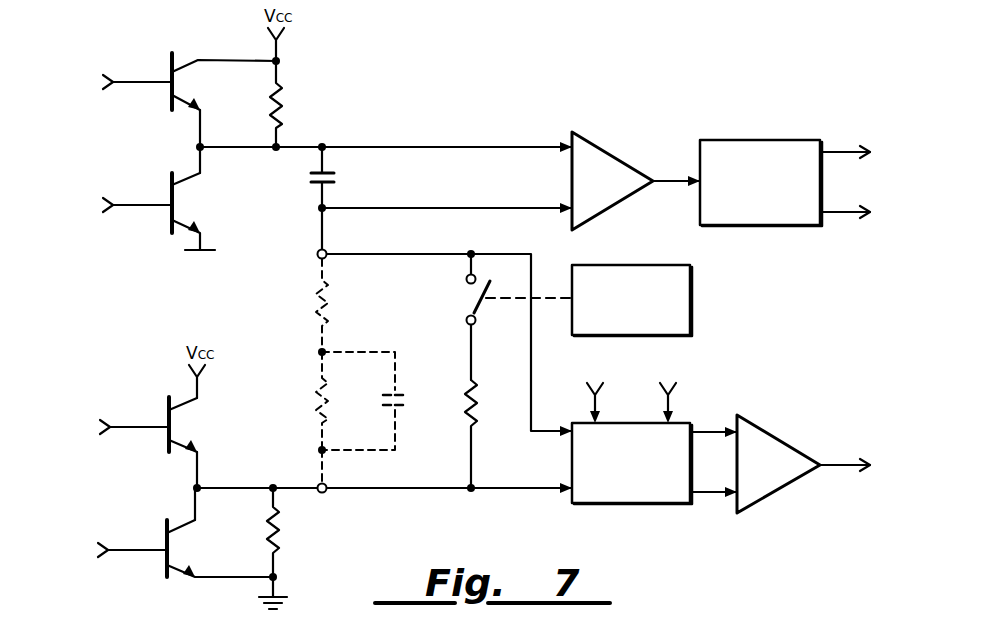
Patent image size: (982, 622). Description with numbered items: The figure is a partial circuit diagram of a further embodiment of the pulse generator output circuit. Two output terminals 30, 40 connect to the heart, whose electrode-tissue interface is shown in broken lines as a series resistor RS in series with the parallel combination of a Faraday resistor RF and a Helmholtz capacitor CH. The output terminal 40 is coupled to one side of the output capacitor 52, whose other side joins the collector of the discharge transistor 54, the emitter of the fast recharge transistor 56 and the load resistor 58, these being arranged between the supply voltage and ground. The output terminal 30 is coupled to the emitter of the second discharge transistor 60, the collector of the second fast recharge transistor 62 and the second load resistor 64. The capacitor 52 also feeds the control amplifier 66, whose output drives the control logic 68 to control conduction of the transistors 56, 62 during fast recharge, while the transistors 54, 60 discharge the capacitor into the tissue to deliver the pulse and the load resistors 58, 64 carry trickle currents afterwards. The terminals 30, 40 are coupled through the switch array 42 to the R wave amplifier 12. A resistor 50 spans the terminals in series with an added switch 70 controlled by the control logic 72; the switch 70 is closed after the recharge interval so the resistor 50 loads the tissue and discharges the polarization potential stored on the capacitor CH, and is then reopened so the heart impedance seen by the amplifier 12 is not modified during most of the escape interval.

The R wave amplifier 12 is at (768, 495).
The output terminal 30 is at (324, 493).
The output terminal 40 is at (326, 250).
The switch array 42 is at (627, 503).
The resistor 50 is at (478, 405).
The output capacitor 52 is at (337, 178).
The discharge transistor 54 is at (187, 204).
The fast recharge transistor 56 is at (187, 82).
The load resistor 58 is at (285, 97).
The second discharge transistor 60 is at (181, 423).
The second fast recharge transistor 62 is at (180, 548).
The second load resistor 64 is at (282, 531).
The control amplifier 66 is at (605, 147).
The control logic 68 is at (758, 140).
The switch 70 is at (480, 308).
The control logic 72 is at (690, 293).
The series resistor RS is at (333, 303).
The Faraday resistor RF is at (333, 398).
The Helmholtz capacitor CH is at (410, 398).